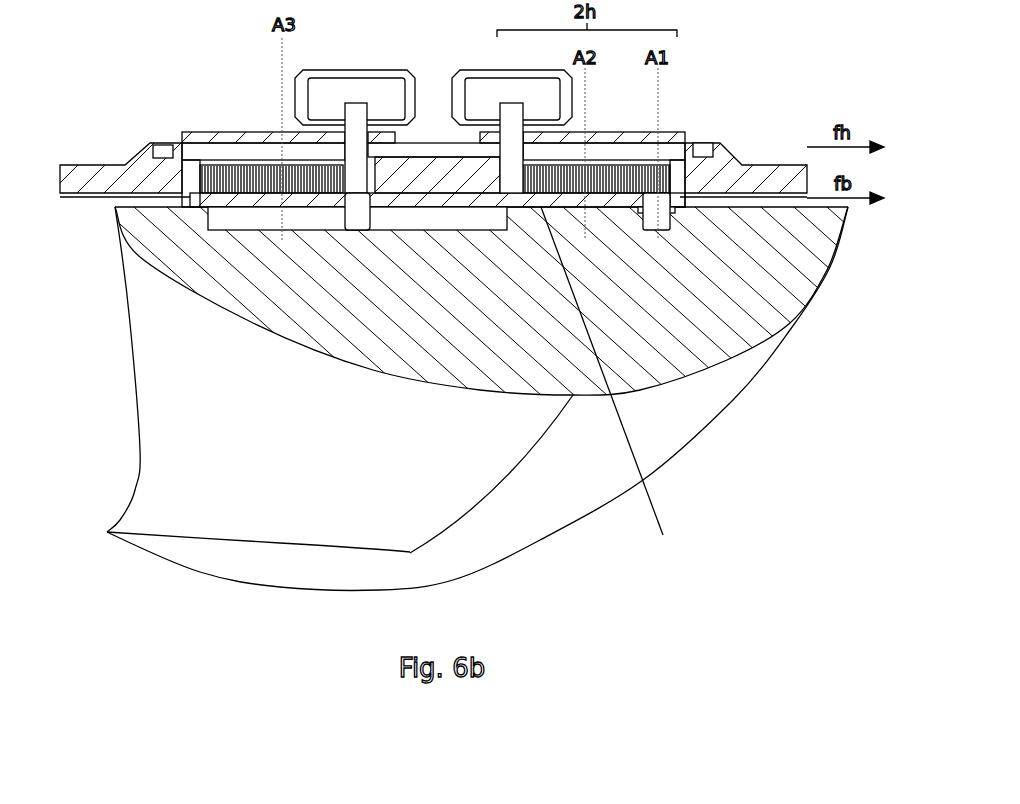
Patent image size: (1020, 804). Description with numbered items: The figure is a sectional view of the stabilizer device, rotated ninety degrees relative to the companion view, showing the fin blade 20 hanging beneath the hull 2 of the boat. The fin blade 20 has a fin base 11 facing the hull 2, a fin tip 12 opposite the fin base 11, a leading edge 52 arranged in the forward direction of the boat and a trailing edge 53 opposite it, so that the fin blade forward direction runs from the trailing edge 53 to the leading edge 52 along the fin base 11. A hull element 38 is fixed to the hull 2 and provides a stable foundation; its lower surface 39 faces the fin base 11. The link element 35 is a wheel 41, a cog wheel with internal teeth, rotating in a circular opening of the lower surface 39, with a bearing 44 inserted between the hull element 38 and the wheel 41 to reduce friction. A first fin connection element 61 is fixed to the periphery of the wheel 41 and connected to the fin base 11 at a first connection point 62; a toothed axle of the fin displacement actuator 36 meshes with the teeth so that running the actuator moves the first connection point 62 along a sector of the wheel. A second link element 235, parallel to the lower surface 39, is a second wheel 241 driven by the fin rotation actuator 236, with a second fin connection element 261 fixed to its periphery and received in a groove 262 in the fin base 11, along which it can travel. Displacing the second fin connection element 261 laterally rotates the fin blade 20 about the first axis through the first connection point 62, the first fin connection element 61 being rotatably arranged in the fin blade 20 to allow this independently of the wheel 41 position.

The hull 2 is at (121, 159).
The fin base 11 is at (433, 160).
The fin tip 12 is at (258, 580).
The fin blade 20 is at (477, 398).
The link element 35 is at (604, 140).
The fin displacement actuator 36 is at (512, 100).
The hull element 38 is at (741, 142).
The lower surface 39 is at (627, 379).
The wheel 41 is at (635, 165).
The bearing 44 is at (445, 118).
The leading edge 52 is at (489, 301).
The trailing edge 53 is at (98, 369).
The first fin connection element 61 is at (619, 394).
The first connection point 62 is at (510, 315).
The second link element 235 is at (260, 128).
The fin rotation actuator 236 is at (355, 103).
The second wheel 241 is at (431, 150).
The second fin connection element 261 is at (359, 321).
The groove 262 is at (431, 304).